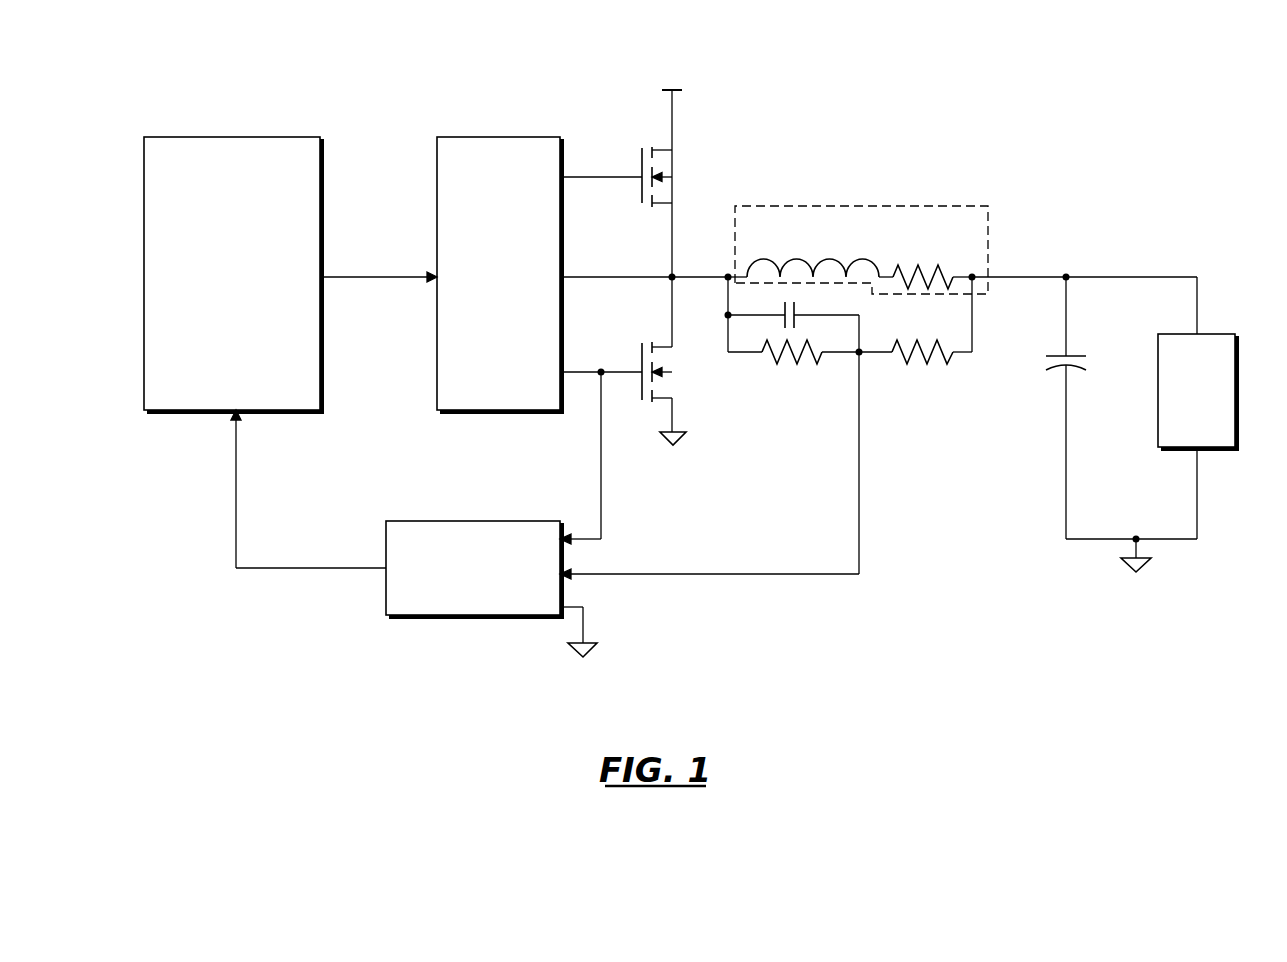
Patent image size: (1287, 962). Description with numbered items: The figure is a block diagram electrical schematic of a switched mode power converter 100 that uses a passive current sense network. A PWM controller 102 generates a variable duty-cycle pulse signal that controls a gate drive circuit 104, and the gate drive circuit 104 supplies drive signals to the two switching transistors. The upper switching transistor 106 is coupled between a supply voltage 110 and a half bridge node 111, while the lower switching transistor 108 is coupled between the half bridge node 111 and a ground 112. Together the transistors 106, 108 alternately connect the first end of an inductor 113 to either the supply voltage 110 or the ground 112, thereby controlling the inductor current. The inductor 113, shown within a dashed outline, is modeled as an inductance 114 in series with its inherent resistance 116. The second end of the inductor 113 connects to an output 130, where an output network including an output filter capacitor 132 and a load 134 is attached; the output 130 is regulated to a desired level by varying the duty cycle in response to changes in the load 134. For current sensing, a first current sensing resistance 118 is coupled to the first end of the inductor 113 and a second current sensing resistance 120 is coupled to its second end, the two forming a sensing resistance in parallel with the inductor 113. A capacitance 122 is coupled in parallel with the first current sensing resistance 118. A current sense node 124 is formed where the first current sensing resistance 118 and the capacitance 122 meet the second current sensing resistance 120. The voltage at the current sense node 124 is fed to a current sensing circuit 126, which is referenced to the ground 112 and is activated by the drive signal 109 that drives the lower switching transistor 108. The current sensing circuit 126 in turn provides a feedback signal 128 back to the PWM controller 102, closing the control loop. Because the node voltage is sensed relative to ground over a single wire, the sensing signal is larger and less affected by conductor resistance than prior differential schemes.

The power converter 100 is at (1027, 31).
The PWM controller 102 is at (205, 137).
The gate drive circuit 104 is at (497, 137).
The upper switching transistor 106 is at (674, 185).
The lower switching transistor 108 is at (674, 382).
The drive signal 109 is at (636, 370).
The supply voltage 110 is at (673, 100).
The half bridge node 111 is at (670, 272).
The ground 112 is at (686, 435).
The inductor 113 is at (920, 206).
The inductance 114 is at (828, 258).
The inherent resistance 116 is at (912, 277).
The first current sensing resistance 118 is at (775, 358).
The second current sensing resistance 120 is at (918, 358).
The capacitance 122 is at (796, 311).
The current sense node 124 is at (862, 356).
The current sensing circuit 126 is at (473, 521).
The feedback signal 128 is at (302, 568).
The output 130 is at (1008, 277).
The output filter capacitor 132 is at (1072, 355).
The load 134 is at (1210, 334).